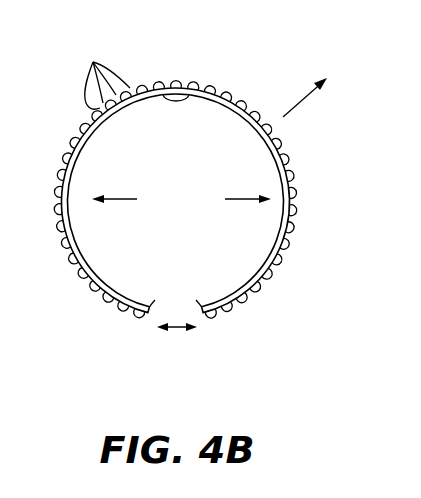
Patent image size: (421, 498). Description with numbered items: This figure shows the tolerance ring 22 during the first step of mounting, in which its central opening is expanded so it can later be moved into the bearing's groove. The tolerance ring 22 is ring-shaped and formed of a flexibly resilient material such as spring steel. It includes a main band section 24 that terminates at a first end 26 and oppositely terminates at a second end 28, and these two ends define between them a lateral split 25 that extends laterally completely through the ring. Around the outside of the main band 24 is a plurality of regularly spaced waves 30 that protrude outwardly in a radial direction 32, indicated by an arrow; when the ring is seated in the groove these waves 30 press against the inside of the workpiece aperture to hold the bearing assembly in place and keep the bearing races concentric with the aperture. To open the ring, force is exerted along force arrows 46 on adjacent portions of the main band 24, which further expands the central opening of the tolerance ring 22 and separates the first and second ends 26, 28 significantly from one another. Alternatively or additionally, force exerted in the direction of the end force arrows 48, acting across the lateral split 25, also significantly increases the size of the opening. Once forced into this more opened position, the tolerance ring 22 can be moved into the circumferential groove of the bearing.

The tolerance ring 22 is at (194, 90).
The main band section 24 is at (258, 272).
The lateral split 25 is at (170, 313).
The first end 26 is at (150, 312).
The second end 28 is at (196, 308).
The waves 30 is at (103, 71).
The radial direction 32 is at (302, 103).
The force arrows 46 is at (124, 199).
The end force arrows 48 is at (175, 328).